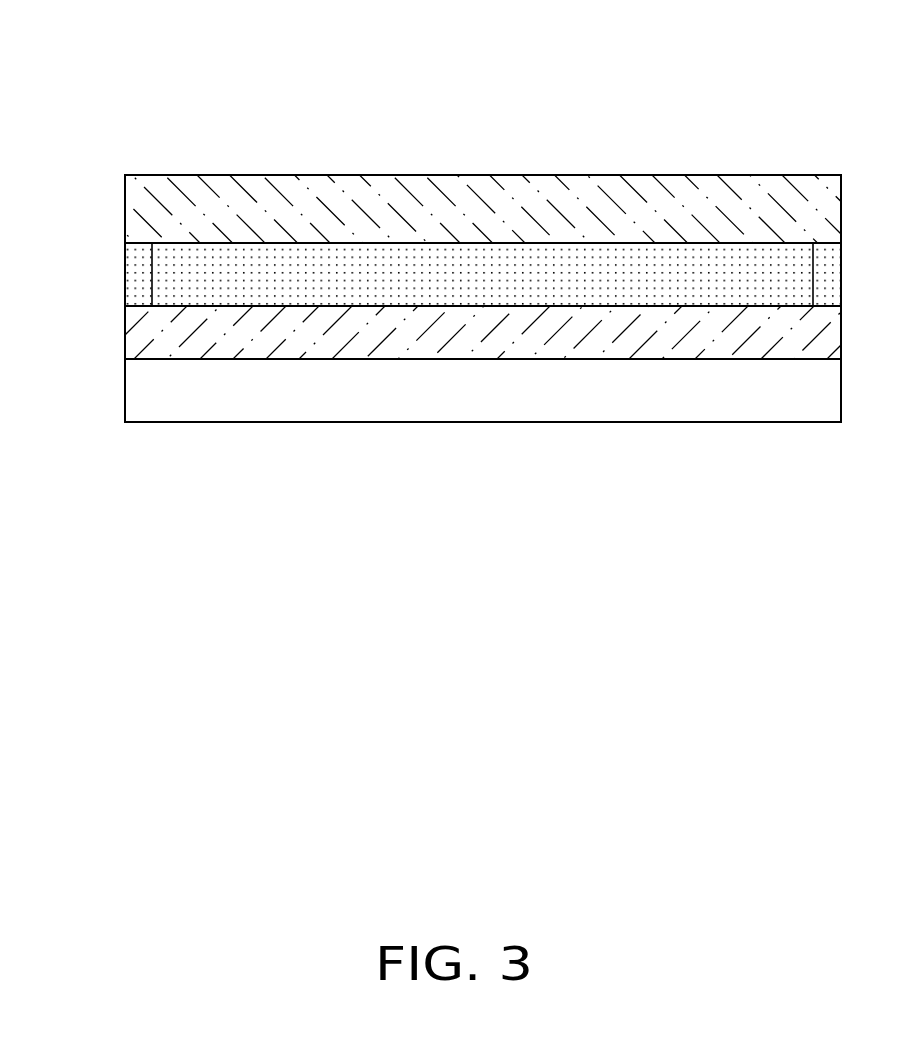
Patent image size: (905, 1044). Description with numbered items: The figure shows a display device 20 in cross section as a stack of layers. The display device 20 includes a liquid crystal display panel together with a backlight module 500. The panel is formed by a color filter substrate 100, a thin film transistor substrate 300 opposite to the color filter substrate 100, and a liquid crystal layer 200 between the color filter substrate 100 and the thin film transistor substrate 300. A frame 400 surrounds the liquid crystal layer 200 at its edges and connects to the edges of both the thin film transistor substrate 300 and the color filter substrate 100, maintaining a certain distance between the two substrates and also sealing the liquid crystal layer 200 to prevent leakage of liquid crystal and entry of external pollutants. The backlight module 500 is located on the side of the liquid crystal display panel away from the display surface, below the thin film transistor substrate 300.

The display device 20 is at (458, 48).
The color filter substrate 100 is at (135, 210).
The liquid crystal layer 200 is at (220, 250).
The thin film transistor substrate 300 is at (137, 331).
The frame 400 is at (135, 290).
The backlight module 500 is at (137, 386).